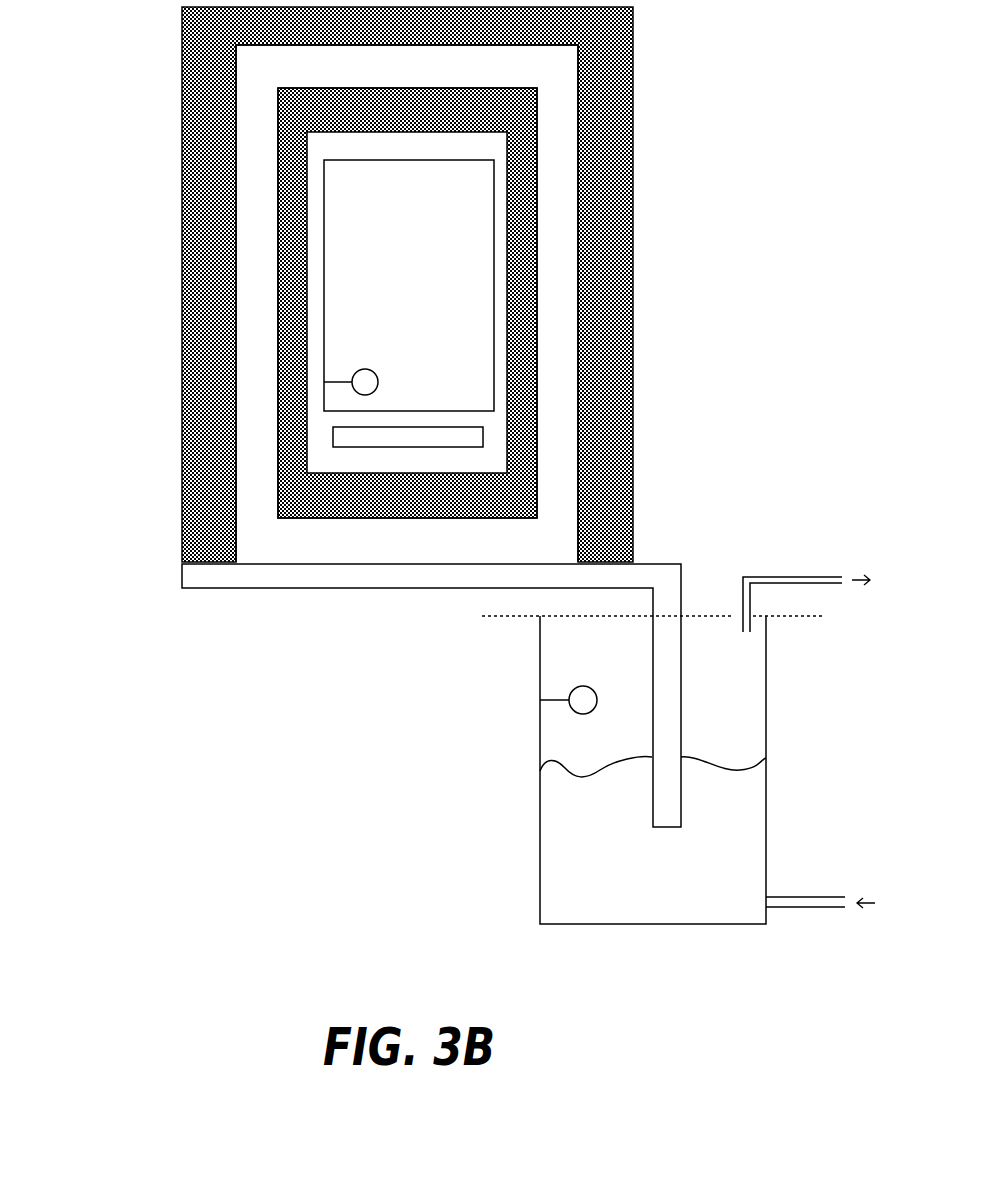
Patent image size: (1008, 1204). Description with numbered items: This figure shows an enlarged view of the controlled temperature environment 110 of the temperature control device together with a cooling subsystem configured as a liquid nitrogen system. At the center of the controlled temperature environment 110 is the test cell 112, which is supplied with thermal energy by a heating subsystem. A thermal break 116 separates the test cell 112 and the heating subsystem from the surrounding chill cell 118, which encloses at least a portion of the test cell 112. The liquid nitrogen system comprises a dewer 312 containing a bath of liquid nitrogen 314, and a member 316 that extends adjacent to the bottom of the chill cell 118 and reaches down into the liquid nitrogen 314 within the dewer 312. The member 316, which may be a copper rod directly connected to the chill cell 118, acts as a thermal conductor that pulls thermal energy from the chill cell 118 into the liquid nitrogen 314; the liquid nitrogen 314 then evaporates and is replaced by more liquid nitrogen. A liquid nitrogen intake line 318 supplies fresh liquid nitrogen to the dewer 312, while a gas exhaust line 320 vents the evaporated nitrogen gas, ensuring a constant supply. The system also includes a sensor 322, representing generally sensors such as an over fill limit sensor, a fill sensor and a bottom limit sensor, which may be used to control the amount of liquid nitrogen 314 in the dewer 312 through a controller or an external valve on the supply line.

The controlled temperature environment 110 is at (138, 96).
The test cell 112 is at (465, 230).
The thermal break 116 is at (522, 335).
The chill cell 118 is at (558, 437).
The dewer 312 is at (766, 728).
The liquid nitrogen 314 is at (558, 859).
The member 316 is at (333, 582).
The liquid nitrogen intake line 318 is at (785, 907).
The gas exhaust line 320 is at (792, 577).
The sensor 322 is at (573, 690).